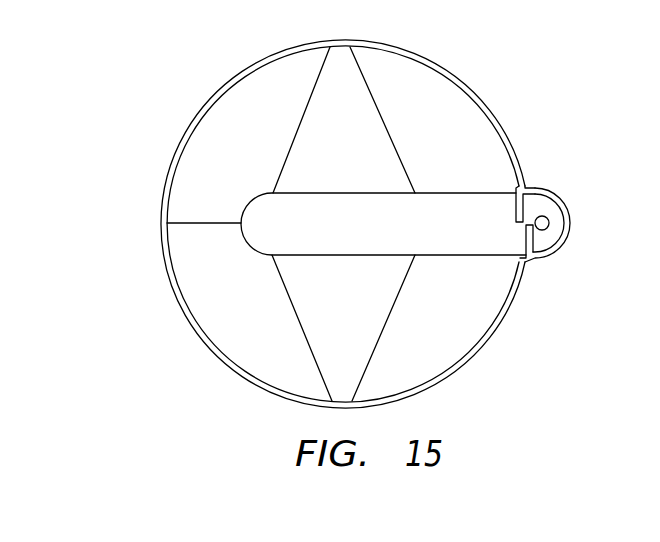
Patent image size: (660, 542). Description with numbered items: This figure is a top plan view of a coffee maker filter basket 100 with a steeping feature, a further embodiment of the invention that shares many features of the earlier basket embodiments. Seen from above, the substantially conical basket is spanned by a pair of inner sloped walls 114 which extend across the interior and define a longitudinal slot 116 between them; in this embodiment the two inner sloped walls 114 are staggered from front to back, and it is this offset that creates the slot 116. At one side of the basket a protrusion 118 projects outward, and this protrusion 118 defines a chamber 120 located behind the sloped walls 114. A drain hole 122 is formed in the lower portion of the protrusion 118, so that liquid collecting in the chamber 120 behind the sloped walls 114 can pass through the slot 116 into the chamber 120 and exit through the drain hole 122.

The filter basket 100 is at (133, 292).
The inner sloped walls 114 is at (525, 242).
The longitudinal slot 116 is at (533, 205).
The protrusion 118 is at (568, 239).
The chamber 120 is at (531, 262).
The drain hole 122 is at (549, 223).